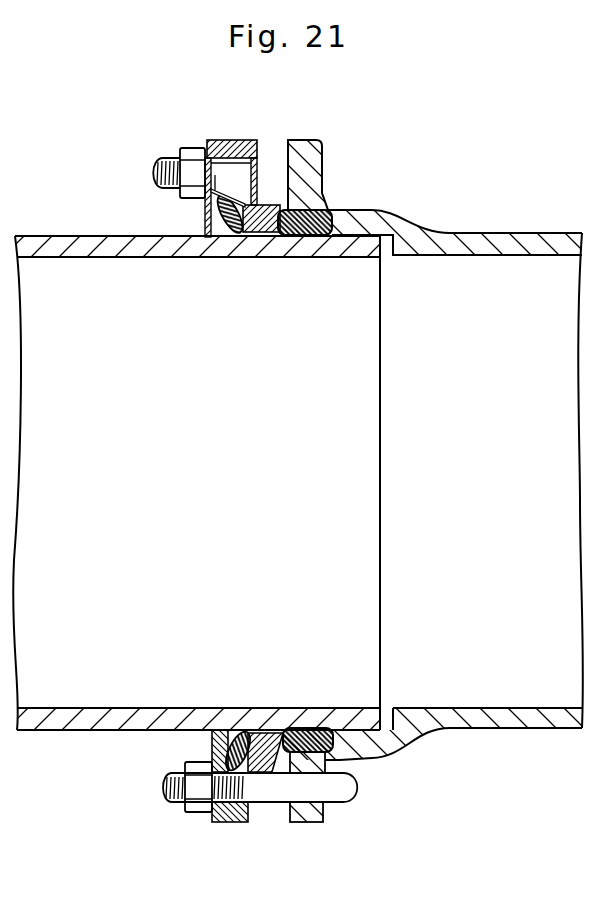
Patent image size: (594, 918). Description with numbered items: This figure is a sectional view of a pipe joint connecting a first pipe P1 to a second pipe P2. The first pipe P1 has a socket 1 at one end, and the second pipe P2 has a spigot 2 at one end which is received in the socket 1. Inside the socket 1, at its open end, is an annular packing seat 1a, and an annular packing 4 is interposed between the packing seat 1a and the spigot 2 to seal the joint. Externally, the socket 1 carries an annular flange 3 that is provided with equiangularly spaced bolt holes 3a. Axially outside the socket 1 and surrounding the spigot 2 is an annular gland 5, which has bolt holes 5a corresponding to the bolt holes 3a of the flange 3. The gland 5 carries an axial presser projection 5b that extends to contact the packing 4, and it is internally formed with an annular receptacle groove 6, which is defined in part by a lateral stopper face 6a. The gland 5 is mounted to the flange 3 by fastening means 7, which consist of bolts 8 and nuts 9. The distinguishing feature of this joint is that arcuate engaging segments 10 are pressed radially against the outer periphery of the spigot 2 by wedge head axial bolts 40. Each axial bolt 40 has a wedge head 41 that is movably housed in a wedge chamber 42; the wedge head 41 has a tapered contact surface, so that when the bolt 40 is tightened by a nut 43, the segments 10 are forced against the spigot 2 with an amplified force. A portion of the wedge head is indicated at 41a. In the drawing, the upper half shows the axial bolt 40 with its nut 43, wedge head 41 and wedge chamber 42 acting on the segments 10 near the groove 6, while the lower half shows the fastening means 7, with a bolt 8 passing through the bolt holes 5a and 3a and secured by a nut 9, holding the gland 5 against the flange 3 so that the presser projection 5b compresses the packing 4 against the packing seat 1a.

The socket 1 is at (432, 461).
The annular packing seat 1a is at (318, 217).
The spigot 2 is at (352, 243).
The annular flange 3 is at (318, 140).
The bolt holes 3a is at (322, 793).
The annular packing 4 is at (305, 218).
The annular gland 5 is at (216, 220).
The bolt holes 5a is at (243, 796).
The axial presser projection 5b is at (277, 232).
The annular receptacle groove 6 is at (225, 232).
The lateral stopper face 6a is at (227, 731).
The fastening means 7 is at (220, 831).
The bolts 8 is at (163, 778).
The nuts 9 is at (202, 808).
The arcuate engaging segments 10 is at (236, 230).
The axial bolt 40 is at (151, 163).
The wedge head 41 is at (227, 163).
The washer leg 41a is at (207, 208).
The wedge chamber 42 is at (253, 165).
The nut 43 is at (190, 148).
The first pipe P1 is at (560, 250).
The second pipe P2 is at (57, 248).